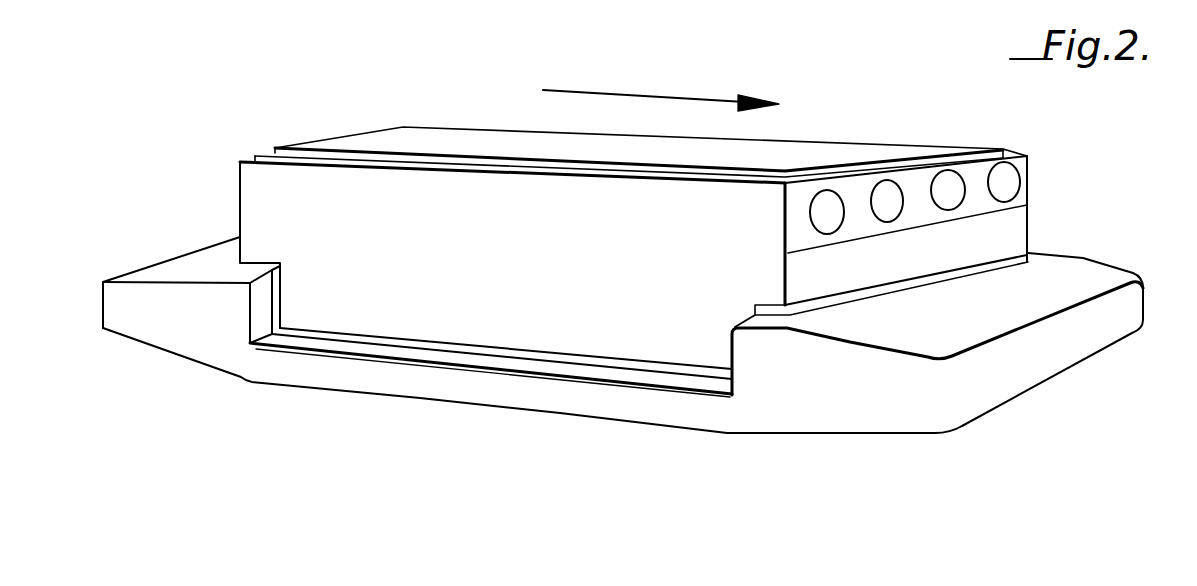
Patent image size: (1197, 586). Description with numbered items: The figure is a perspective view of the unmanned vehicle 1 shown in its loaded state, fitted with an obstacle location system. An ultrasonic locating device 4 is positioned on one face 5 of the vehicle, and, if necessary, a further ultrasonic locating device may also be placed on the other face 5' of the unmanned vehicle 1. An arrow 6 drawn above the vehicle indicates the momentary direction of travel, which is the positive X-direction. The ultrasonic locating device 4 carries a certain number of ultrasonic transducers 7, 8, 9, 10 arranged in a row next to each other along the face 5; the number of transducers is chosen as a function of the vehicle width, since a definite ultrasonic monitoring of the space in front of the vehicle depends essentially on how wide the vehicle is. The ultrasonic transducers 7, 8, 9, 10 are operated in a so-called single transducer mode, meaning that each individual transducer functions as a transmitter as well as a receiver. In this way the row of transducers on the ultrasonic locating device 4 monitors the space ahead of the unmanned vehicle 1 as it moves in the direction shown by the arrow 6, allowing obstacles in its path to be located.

The unmanned vehicle 1 is at (397, 122).
The ultrasonic locating device 4 is at (1020, 167).
The face 5 is at (919, 235).
The other face 5' is at (479, 245).
The arrow 6 is at (680, 93).
The ultrasonic transducer 7 is at (1005, 178).
The ultrasonic transducer 8 is at (950, 186).
The ultrasonic transducer 9 is at (888, 196).
The ultrasonic transducer 10 is at (827, 207).